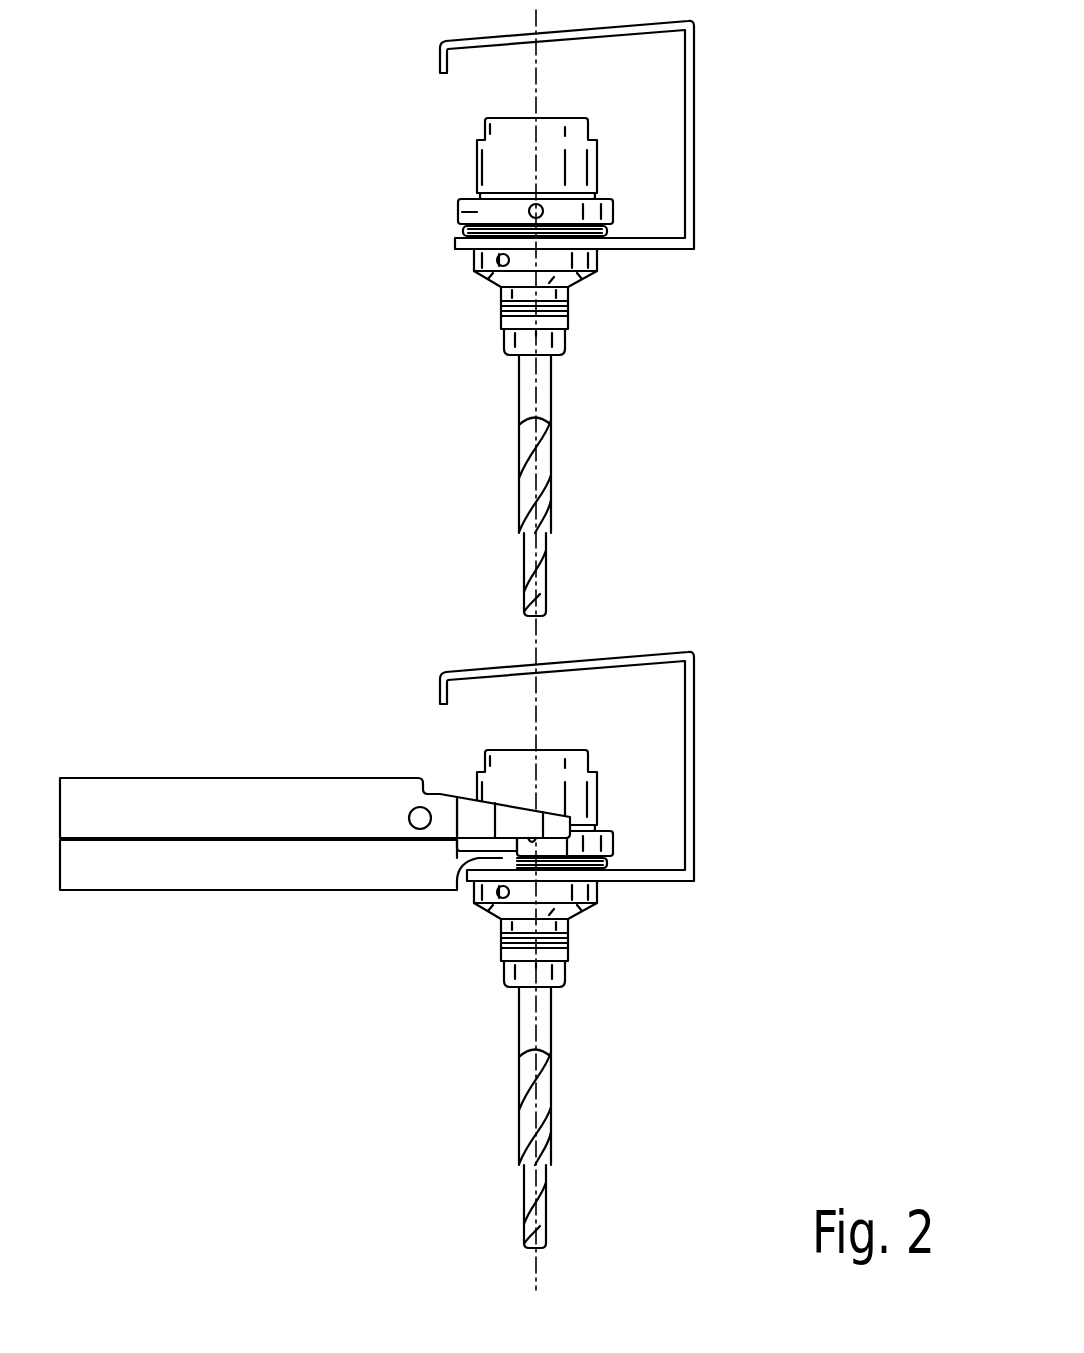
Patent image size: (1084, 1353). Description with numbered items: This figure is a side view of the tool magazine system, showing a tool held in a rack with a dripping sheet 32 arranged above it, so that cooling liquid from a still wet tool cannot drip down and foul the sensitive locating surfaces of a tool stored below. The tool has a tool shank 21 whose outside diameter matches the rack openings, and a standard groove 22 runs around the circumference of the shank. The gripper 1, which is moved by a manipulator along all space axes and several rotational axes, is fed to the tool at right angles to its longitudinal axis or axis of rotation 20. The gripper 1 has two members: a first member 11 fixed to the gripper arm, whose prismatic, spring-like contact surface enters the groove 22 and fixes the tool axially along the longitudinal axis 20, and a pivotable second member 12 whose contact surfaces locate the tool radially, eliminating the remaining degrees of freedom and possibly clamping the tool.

The gripper 1 is at (147, 760).
The first member 11 is at (457, 880).
The second member 12 is at (553, 826).
The longitudinal axis 20 is at (525, 517).
The tool shank 21 is at (477, 212).
The groove 22 is at (593, 864).
The dripping sheet 32 is at (627, 655).